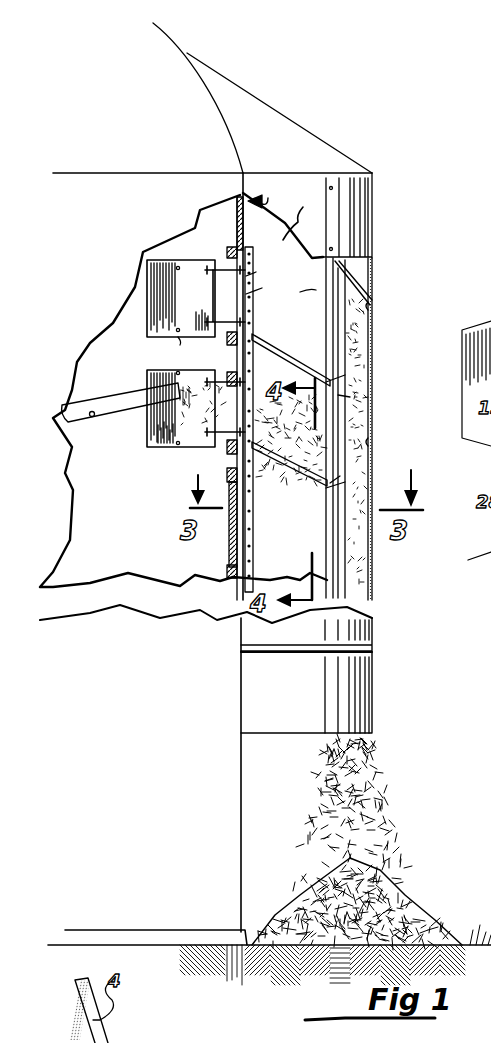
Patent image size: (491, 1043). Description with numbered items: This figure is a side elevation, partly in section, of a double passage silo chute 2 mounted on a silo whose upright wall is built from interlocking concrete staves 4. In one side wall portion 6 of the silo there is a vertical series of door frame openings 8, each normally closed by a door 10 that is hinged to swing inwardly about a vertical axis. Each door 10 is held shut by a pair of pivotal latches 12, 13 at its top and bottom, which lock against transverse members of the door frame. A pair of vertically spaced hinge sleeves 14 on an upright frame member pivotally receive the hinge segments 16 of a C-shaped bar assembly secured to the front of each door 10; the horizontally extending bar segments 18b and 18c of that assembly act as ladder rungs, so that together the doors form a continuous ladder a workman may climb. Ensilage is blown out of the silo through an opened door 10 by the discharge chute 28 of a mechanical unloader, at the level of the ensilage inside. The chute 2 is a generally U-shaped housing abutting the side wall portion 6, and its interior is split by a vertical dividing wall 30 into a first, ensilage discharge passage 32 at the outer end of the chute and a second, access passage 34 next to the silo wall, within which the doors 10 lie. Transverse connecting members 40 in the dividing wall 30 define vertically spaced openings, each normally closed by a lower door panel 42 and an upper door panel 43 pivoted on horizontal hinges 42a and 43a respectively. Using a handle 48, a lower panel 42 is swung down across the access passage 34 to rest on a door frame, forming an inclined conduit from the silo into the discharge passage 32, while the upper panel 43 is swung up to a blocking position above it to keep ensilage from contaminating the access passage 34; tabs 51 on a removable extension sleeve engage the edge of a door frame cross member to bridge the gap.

The silo chute 2 is at (377, 196).
The interlocking staves 4 is at (237, 226).
The side wall portion 6 is at (263, 193).
The door frame openings 8 is at (227, 251).
The door 10 is at (155, 370).
The pivotal latch 12 is at (175, 262).
The pivotal latch 13 is at (180, 345).
The hinge sleeves 14 is at (265, 268).
The hinge segments 16 is at (267, 286).
The horizontally extending bar segment 18b is at (222, 320).
The horizontally extending bar segment 18c is at (222, 282).
The discharge chute 28 is at (115, 416).
The dividing wall 30 is at (340, 327).
The ensilage discharge passage 32 is at (366, 344).
The access passage 34 is at (299, 215).
The transverse connecting members 40 is at (332, 382).
The lower door panel 42 is at (330, 324).
The hinge 42a is at (340, 476).
The upper door panel 43 is at (335, 290).
The hinge 43a is at (350, 397).
The handle 48 is at (300, 292).
The tabs 51 is at (178, 38).